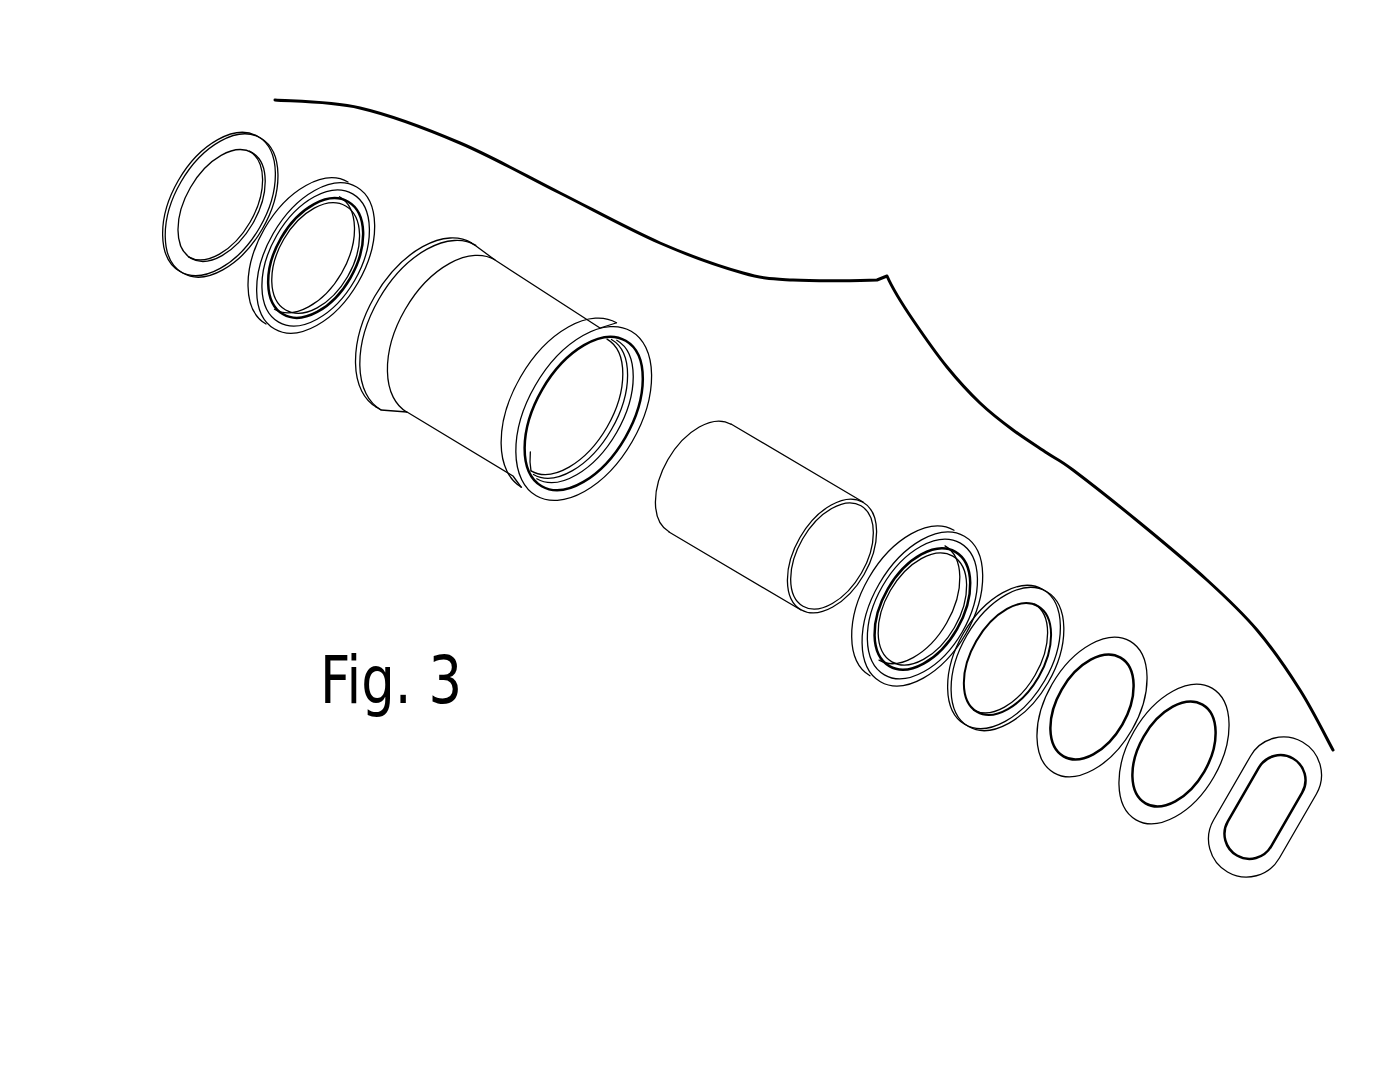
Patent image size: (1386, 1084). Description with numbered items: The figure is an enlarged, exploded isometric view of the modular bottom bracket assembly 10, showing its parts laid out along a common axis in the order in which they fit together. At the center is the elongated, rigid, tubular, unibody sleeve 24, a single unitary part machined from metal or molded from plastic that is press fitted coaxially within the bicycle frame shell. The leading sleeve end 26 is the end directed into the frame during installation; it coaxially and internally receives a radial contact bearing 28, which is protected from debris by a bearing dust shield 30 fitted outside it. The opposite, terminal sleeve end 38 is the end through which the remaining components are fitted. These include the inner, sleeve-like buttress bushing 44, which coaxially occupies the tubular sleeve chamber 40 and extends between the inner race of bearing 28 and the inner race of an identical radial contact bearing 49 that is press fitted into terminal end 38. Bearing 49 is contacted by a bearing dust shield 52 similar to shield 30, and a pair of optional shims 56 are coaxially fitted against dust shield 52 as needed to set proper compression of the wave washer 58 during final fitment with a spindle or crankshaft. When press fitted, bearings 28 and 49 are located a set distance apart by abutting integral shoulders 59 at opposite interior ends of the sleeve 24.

The modular bottom bracket assembly 10 is at (804, 425).
The tubular sleeve 24 is at (500, 400).
The leading sleeve end 26 is at (353, 373).
The radial contact bearing 28 is at (267, 325).
The bearing dust shield 30 is at (183, 262).
The terminal sleeve end 38 is at (591, 439).
The tubular sleeve chamber 40 is at (560, 435).
The buttress bushing 44 is at (755, 545).
The radial contact bearing 49 is at (873, 672).
The bearing dust shield 52 is at (962, 722).
The shims 56 is at (1053, 817).
The wave washer 58 is at (1223, 853).
The integral shoulders 59 is at (625, 392).